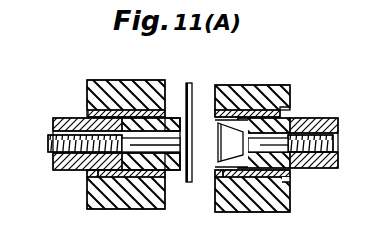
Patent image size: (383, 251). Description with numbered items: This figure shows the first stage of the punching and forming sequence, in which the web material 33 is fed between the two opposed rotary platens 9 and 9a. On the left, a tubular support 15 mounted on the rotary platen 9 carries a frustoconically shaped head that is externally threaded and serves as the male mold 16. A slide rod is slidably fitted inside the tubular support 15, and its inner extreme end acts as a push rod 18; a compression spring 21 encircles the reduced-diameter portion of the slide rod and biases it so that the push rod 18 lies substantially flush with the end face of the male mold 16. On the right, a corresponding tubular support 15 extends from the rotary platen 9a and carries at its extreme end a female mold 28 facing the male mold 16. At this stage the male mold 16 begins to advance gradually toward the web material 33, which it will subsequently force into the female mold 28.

The rotary platen 9 is at (137, 80).
The rotary platen 9a is at (262, 85).
The tubular support 15 is at (68, 118).
The male mold 16 is at (175, 120).
The push rod 18 is at (142, 148).
The compression spring 21 is at (63, 168).
The female mold 28 is at (232, 150).
The web material 33 is at (193, 97).